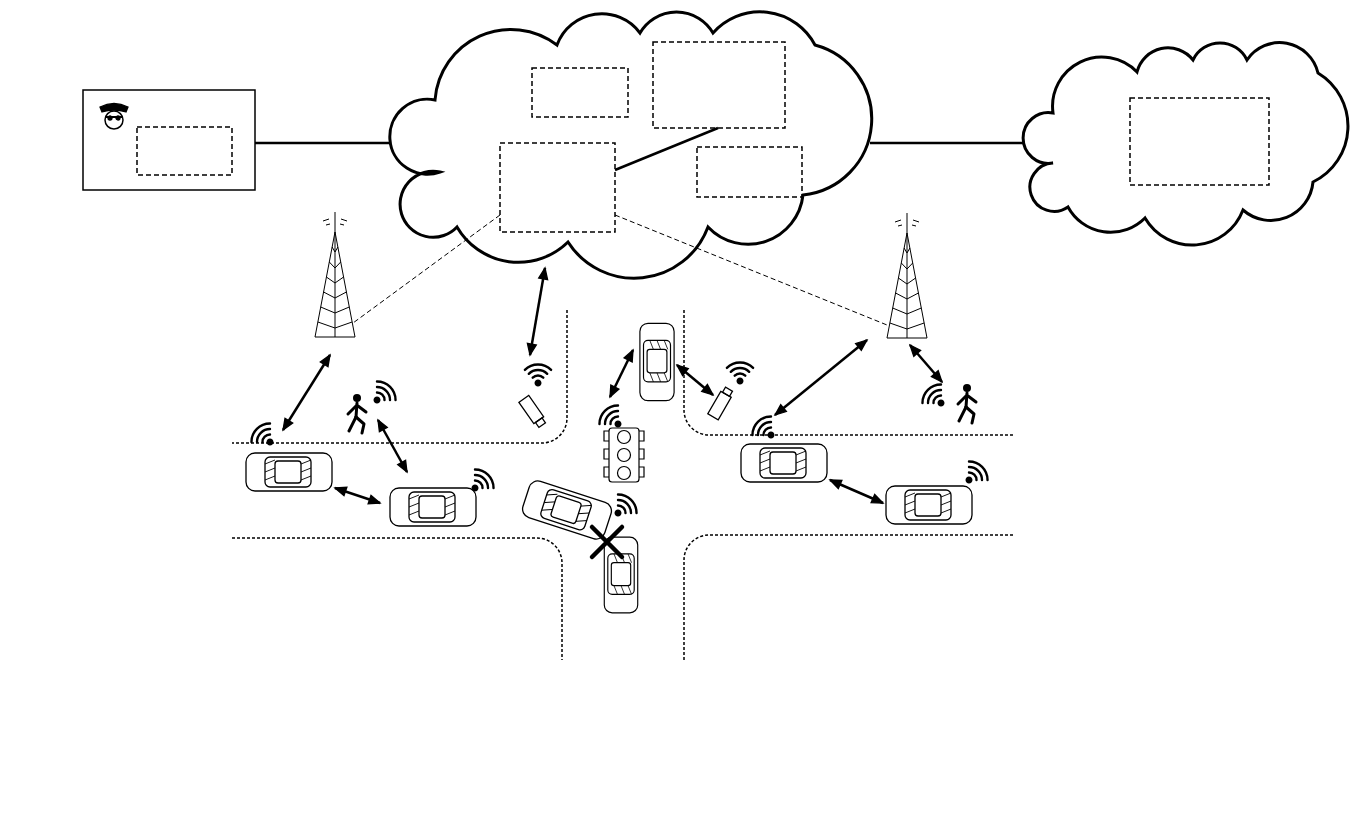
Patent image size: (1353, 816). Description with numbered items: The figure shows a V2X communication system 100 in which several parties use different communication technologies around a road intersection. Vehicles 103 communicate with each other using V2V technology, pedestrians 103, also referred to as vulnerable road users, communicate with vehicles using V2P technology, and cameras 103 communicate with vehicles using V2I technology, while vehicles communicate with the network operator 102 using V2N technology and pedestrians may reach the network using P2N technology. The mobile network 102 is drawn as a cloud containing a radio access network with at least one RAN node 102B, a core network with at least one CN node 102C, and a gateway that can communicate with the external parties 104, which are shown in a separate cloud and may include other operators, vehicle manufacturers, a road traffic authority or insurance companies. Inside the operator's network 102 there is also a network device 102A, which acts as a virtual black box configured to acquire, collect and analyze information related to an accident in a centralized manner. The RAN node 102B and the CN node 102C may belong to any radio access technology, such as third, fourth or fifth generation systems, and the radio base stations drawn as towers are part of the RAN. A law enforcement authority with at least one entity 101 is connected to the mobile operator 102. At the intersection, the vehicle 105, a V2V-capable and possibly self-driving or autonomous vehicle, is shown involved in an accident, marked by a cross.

The V2X communication system 100 is at (118, 41).
The law enforcement authority entity 101 is at (169, 140).
The mobile network of the network operator 102 is at (502, 83).
The network device 102A is at (580, 92).
The RAN node 102B is at (557, 187).
The core network node 102C is at (719, 85).
The vehicles, pedestrians and cameras 103 is at (928, 527).
The external parties 104 is at (1305, 88).
The vehicle involved in an accident 105 is at (585, 545).